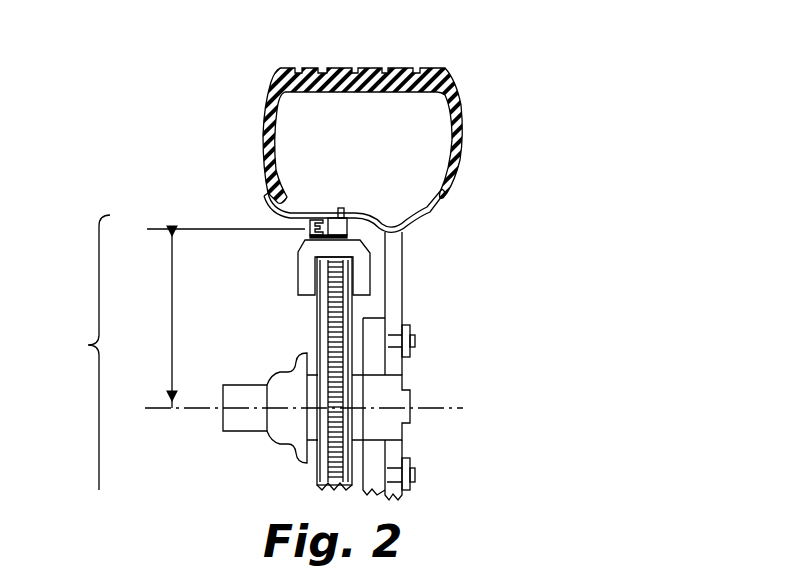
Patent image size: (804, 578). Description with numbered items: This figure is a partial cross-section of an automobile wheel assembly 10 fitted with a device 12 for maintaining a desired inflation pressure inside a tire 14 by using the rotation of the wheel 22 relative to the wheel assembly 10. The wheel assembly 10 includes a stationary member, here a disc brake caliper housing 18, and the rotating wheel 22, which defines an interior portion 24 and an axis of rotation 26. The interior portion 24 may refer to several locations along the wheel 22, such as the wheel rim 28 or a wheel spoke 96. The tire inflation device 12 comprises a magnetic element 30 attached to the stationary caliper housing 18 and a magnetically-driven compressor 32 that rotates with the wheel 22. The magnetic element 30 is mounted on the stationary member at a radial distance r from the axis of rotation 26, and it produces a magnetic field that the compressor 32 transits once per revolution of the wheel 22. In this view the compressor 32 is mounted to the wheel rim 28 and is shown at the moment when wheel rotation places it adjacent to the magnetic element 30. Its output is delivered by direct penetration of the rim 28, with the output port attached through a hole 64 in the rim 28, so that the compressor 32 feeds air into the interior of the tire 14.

The wheel assembly 10 is at (489, 78).
The tire inflation device 12 is at (342, 206).
The tire 14 is at (265, 123).
The disc brake caliper housing 18 is at (298, 270).
The wheel 22 is at (403, 250).
The interior portion 24 is at (80, 352).
The axis of rotation 26 is at (450, 405).
The wheel rim 28 is at (380, 215).
The magnetic element 30 is at (312, 228).
The compressor 32 is at (404, 236).
The hole 64 is at (337, 217).
The wheel spoke 96 is at (403, 300).